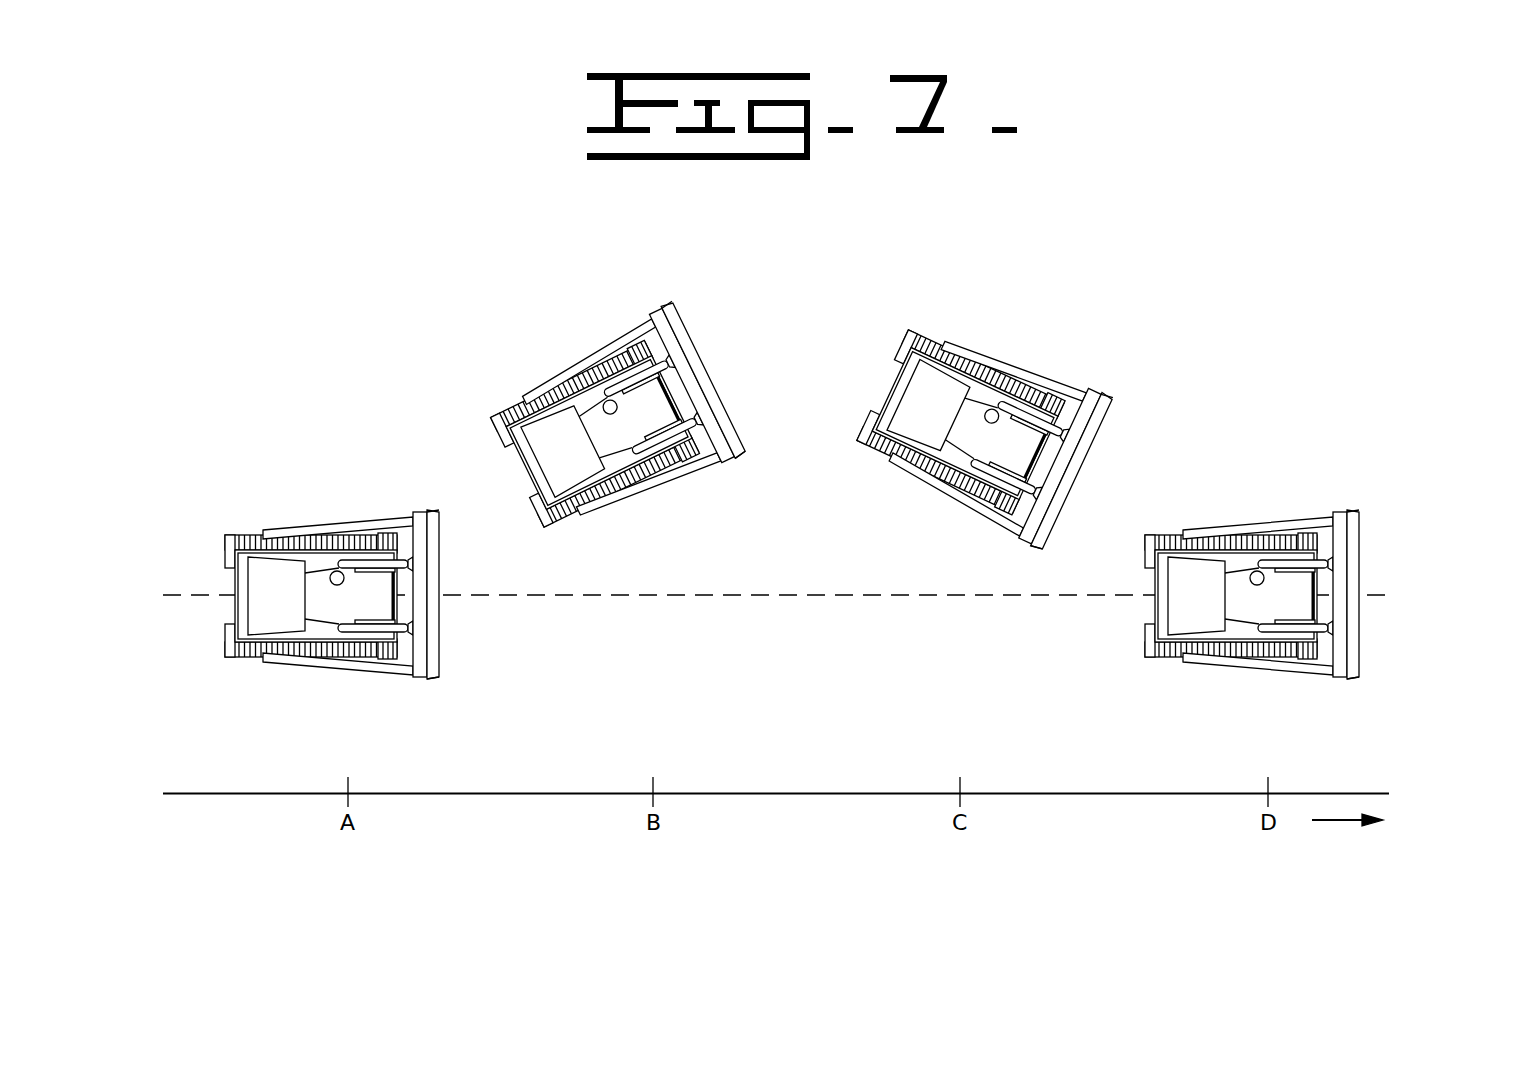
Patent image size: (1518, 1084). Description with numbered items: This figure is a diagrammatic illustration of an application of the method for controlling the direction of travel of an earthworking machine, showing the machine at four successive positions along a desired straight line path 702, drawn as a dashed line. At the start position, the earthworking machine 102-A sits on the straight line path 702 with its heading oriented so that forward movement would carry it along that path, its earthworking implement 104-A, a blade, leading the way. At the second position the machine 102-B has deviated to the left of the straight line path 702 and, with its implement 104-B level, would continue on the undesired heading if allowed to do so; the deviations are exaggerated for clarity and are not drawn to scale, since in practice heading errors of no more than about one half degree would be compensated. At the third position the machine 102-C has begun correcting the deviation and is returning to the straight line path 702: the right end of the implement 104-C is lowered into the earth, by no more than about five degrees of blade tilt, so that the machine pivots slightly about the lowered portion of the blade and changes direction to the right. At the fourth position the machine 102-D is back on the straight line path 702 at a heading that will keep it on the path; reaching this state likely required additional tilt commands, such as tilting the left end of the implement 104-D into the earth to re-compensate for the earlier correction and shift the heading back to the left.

The earthworking machine 102-A is at (264, 531).
The earthworking implement 104-A is at (437, 633).
The earthworking machine 102-B is at (549, 380).
The earthworking implement 104-B is at (703, 368).
The earthworking machine 102-C is at (893, 400).
The earthworking implement 104-C is at (1100, 437).
The earthworking machine 102-D is at (1177, 603).
The earthworking implement 104-D is at (1357, 558).
The desired straight line path 702 is at (842, 595).